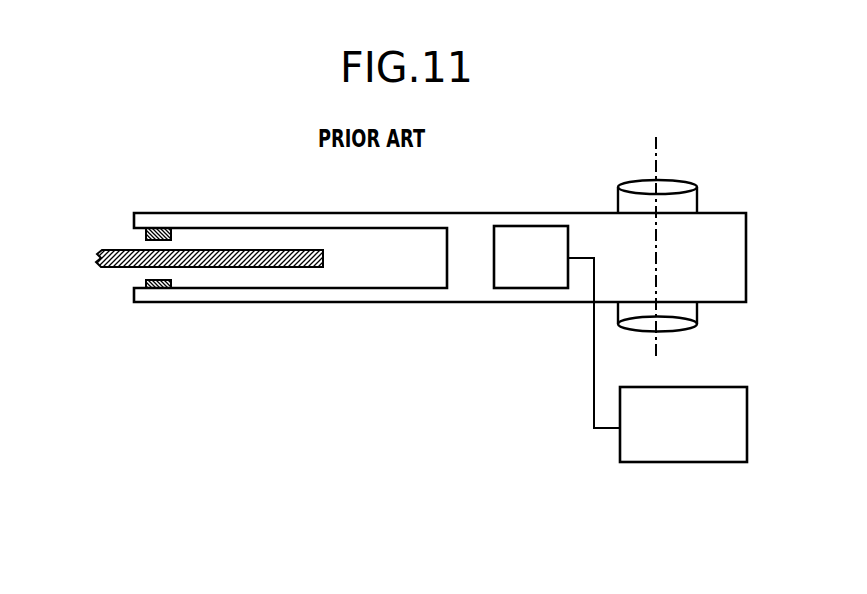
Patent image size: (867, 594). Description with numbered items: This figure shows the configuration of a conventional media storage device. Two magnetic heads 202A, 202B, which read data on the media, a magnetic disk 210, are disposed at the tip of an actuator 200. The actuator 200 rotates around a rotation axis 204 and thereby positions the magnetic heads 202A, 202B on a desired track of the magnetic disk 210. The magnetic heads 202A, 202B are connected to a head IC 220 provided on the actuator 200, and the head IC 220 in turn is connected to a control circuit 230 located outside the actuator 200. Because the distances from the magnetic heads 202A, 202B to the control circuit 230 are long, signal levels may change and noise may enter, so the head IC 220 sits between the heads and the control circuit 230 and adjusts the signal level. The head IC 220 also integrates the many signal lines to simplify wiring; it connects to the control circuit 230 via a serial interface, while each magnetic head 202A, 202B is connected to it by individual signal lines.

The actuator 200 is at (422, 224).
The magnetic head 202A is at (146, 236).
The magnetic head 202B is at (146, 283).
The rotation axis 204 is at (675, 192).
The media (magnetic disk) 210 is at (112, 268).
The head IC 220 is at (515, 275).
The control circuit 230 is at (685, 448).